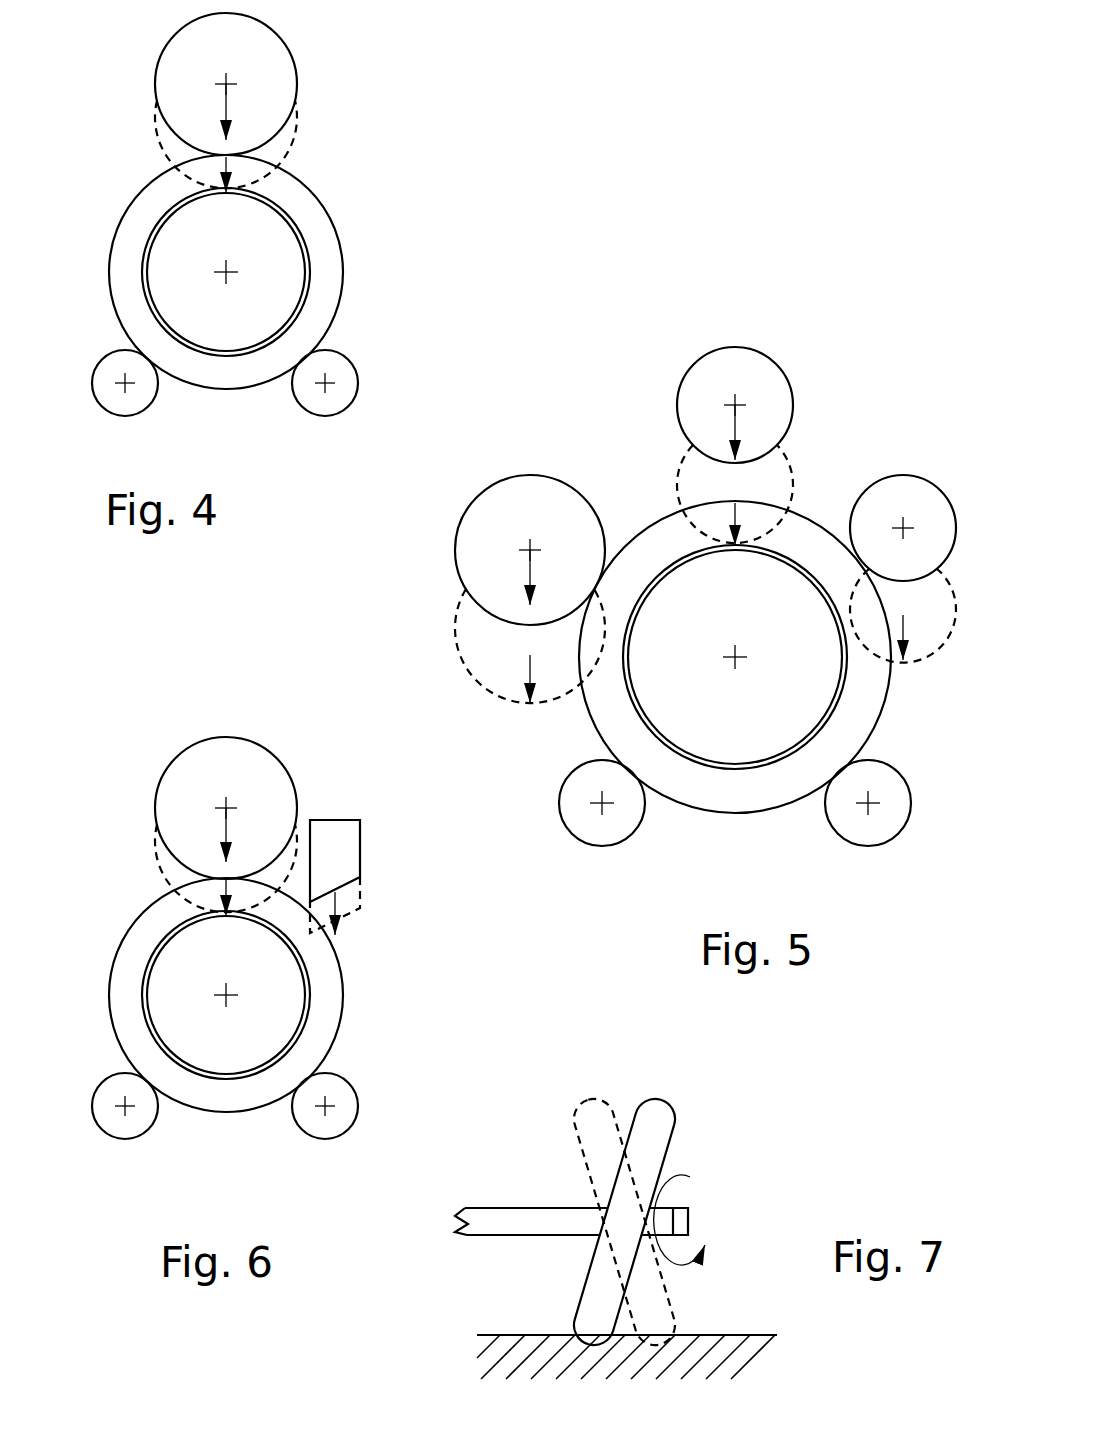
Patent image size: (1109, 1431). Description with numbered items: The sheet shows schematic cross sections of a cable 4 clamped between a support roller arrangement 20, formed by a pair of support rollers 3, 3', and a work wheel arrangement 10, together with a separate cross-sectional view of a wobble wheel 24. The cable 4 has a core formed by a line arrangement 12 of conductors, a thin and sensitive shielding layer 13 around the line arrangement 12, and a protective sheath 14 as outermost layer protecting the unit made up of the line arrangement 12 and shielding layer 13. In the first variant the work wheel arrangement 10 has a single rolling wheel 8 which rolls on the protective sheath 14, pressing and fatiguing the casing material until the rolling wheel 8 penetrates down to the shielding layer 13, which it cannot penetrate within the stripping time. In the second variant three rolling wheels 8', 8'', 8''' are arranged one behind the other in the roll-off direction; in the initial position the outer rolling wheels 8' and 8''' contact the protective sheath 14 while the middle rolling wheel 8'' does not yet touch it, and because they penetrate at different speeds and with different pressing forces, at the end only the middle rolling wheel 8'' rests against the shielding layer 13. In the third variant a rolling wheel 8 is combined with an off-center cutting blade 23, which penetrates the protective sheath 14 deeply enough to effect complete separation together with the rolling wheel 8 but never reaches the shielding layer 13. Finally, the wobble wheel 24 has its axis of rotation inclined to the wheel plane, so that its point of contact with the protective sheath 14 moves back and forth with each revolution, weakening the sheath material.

In FIG. 4, the support roller 3 is at (99, 365).
In FIG. 5, the support roller 3 is at (592, 833).
In FIG. 6, the support roller 3 is at (100, 1082).
In FIG. 4, the support roller 3' is at (354, 365).
In FIG. 5, the support roller 3' is at (895, 812).
In FIG. 6, the support roller 3' is at (354, 1075).
In FIG. 4, the cable 4 is at (231, 260).
In FIG. 4, the rolling wheel 8 is at (195, 102).
In FIG. 6, the rolling wheel 8 is at (224, 792).
In FIG. 5, the rolling wheel 8' is at (530, 554).
In FIG. 5, the rolling wheel 8'' is at (757, 417).
In FIG. 5, the rolling wheel 8''' is at (903, 526).
In FIG. 4, the work wheel arrangement 10 is at (340, 153).
In FIG. 5, the work wheel arrangement 10 is at (445, 573).
In FIG. 6, the work wheel arrangement 10 is at (137, 808).
In FIG. 4, the line arrangement 12 is at (183, 267).
In FIG. 4, the shielding layer 13 is at (307, 267).
In FIG. 5, the shielding layer 13 is at (837, 688).
In FIG. 4, the protective sheath 14 is at (231, 272).
In FIG. 5, the protective sheath 14 is at (726, 657).
In FIG. 7, the protective sheath 14 is at (707, 1357).
In FIG. 4, the support roller arrangement 20 is at (163, 410).
In FIG. 5, the support roller arrangement 20 is at (645, 833).
In FIG. 6, the support roller arrangement 20 is at (297, 1133).
In FIG. 6, the cutting blade 23 is at (333, 847).
In FIG. 7, the wobble wheel 24 is at (655, 1120).